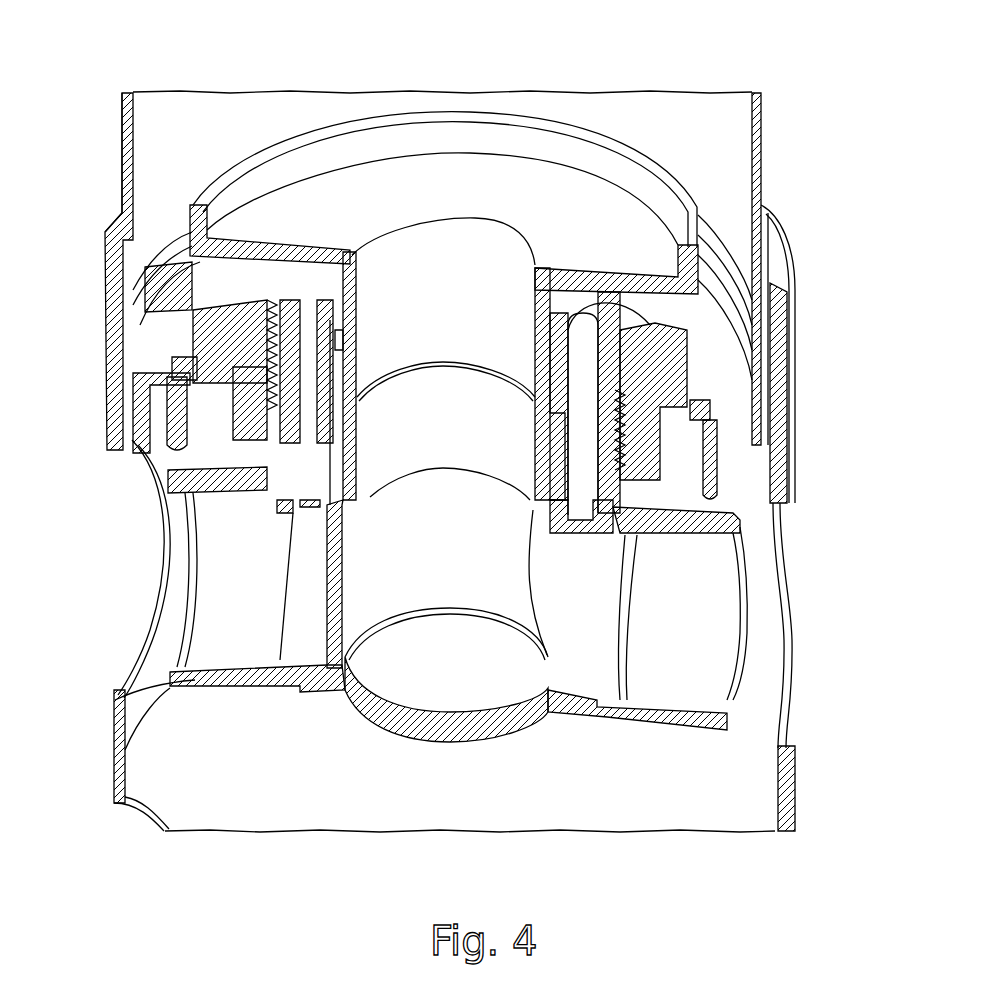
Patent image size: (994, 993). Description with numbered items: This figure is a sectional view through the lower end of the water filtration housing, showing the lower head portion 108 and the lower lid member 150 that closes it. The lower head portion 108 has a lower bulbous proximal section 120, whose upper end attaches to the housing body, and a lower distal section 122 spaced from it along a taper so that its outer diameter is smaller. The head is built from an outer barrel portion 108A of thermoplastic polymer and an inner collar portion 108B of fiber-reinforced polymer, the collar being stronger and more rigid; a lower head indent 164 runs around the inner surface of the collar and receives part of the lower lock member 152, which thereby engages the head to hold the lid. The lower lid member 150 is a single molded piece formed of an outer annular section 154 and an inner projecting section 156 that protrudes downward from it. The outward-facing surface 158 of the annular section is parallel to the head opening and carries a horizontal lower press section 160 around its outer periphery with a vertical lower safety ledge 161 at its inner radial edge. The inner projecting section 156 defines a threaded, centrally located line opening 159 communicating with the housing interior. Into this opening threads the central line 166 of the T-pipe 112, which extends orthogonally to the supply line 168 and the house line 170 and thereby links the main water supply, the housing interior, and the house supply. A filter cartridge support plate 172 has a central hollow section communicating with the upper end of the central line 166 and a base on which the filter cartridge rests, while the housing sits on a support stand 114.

The lower head portion 108 is at (97, 311).
The outer barrel portion 108A is at (748, 384).
The inner collar portion 108B is at (745, 437).
The T-pipe 112 is at (447, 756).
The support stand 114 is at (130, 722).
The lower bulbous proximal section 120 is at (110, 305).
The lower distal section 122 is at (173, 423).
The lower lid member 150 is at (216, 436).
The lower lock member 152 is at (732, 430).
The outer annular section 154 is at (140, 400).
The inner projecting section 156 is at (264, 500).
The outward-facing surface 158 is at (730, 466).
The line opening 159 is at (533, 447).
The lower press section 160 is at (745, 376).
The lower safety ledge 161 is at (335, 362).
The lower head indent 164 is at (143, 357).
The central line 166 is at (372, 488).
The supply line 168 is at (235, 635).
The house line 170 is at (690, 655).
The filter cartridge support plate 172 is at (413, 195).